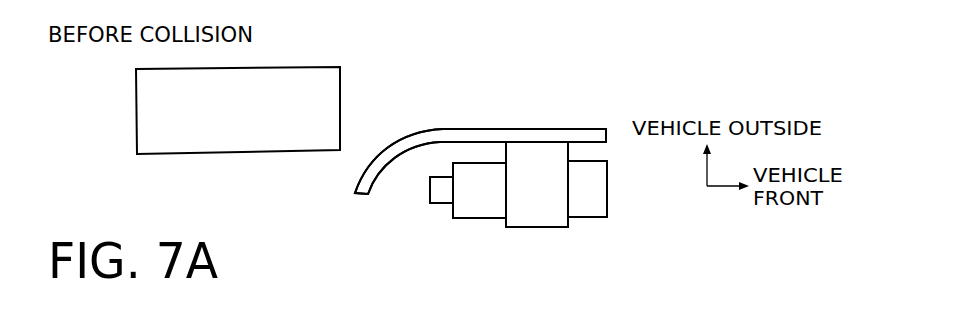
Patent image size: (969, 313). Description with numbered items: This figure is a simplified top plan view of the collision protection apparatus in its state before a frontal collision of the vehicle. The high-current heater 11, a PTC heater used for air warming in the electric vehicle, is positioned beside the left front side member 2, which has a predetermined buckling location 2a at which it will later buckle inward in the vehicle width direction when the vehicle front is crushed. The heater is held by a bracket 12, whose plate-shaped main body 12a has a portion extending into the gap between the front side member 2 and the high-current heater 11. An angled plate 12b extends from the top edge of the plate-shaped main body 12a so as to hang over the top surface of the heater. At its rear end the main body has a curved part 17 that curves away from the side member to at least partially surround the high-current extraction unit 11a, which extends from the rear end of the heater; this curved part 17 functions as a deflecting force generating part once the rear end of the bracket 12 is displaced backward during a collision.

The left front side member 2 is at (214, 158).
The predetermined buckling location 2a is at (341, 71).
The high-current heater 11 is at (466, 231).
The high-current extraction unit 11a is at (437, 191).
The bracket 12 is at (447, 123).
The plate-shaped main body 12a is at (497, 137).
The angled plate 12b is at (540, 203).
The curved part 17 is at (387, 156).